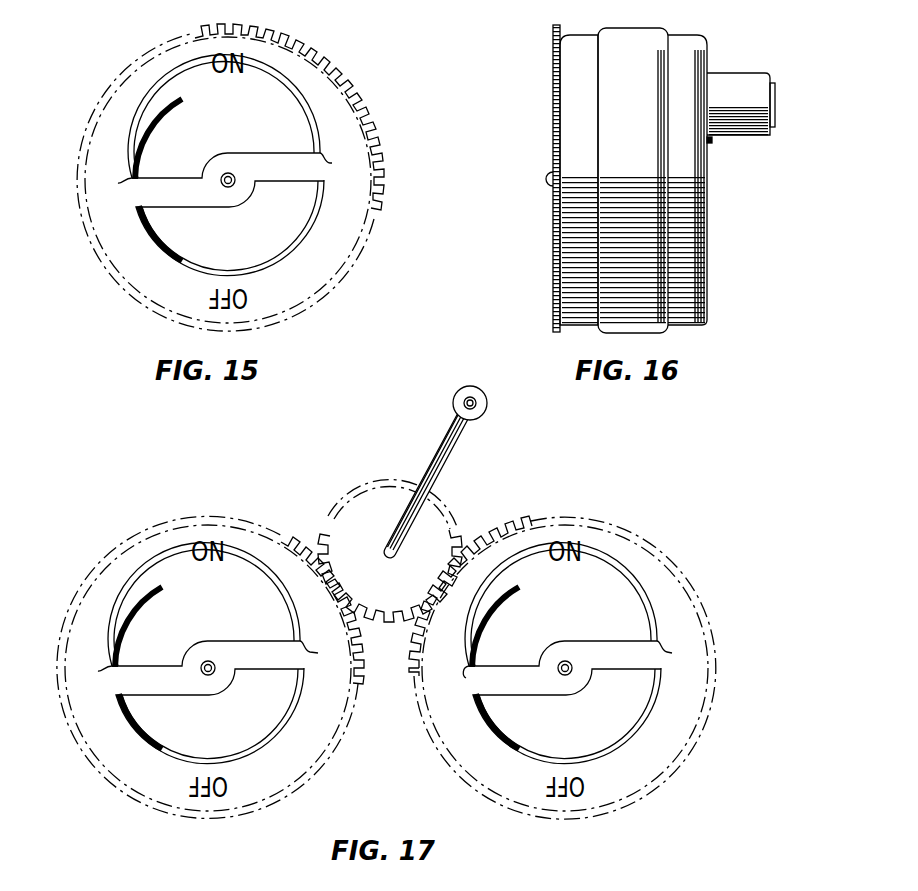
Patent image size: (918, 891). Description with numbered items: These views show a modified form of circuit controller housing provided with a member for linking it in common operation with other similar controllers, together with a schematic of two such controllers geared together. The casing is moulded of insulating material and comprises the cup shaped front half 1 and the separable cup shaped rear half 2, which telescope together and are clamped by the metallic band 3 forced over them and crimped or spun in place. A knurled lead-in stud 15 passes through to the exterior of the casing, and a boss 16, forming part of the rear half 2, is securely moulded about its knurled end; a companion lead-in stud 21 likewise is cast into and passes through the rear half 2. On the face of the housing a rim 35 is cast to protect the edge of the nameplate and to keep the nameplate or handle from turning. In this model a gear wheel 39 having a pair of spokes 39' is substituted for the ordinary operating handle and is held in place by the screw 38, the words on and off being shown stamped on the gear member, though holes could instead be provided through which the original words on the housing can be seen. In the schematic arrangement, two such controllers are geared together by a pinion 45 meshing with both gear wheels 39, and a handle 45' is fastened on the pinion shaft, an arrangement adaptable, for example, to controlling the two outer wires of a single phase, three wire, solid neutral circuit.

In FIG. 16, the cup shaped front half 1 is at (577, 45).
In FIG. 16, the cup shaped rear half 2 is at (687, 43).
In FIG. 16, the metallic band 3 is at (629, 35).
In FIG. 16, the lead-in stud 15 is at (776, 99).
In FIG. 16, the boss 16 is at (738, 82).
In FIG. 16, the lead-in stud 21 is at (716, 144).
In FIG. 15, the rim 35 is at (226, 165).
In FIG. 15, the screw 38 is at (228, 172).
In FIG. 16, the screw 38 is at (549, 177).
In FIG. 15, the gear wheel 39 is at (249, 177).
In FIG. 16, the gear wheel 39 is at (531, 178).
In FIG. 15, the spokes 39' is at (230, 224).
In FIG. 17, the pinion 45 is at (374, 551).
In FIG. 17, the handle 45' is at (453, 469).